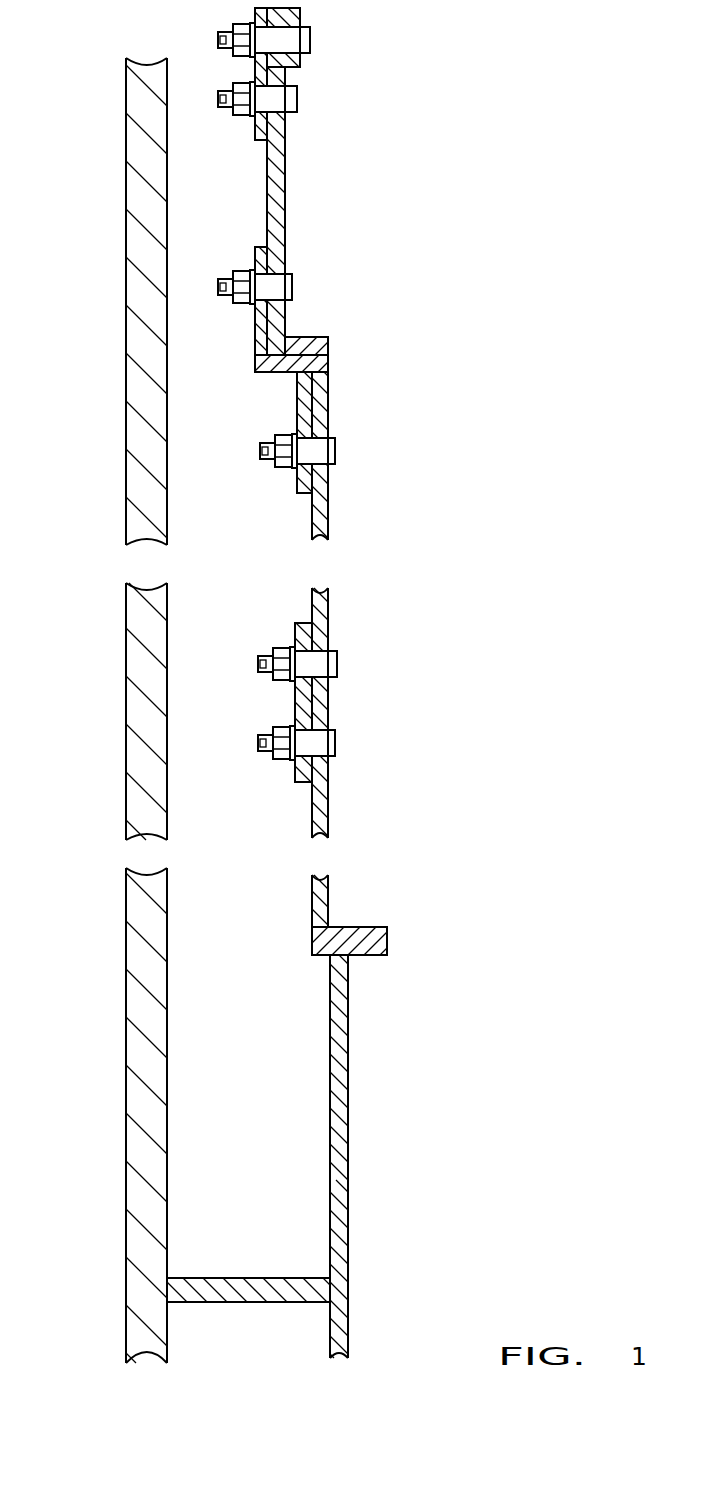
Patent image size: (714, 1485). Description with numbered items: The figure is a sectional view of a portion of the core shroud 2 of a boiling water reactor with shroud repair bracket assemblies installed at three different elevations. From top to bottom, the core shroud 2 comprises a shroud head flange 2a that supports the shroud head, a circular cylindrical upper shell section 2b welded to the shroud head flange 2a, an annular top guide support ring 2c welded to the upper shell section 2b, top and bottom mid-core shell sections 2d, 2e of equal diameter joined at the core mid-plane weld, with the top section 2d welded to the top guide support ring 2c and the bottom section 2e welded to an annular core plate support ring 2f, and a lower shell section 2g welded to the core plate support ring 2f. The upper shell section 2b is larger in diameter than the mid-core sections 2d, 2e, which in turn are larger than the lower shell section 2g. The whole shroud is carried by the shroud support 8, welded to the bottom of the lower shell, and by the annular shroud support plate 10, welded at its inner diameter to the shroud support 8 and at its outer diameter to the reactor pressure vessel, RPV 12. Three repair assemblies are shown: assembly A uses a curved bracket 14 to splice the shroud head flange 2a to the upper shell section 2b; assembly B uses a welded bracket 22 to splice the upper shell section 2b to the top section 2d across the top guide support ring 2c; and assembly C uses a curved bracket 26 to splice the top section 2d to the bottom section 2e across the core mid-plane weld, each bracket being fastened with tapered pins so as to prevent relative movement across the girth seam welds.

The core shroud 2 is at (356, 683).
The shroud head flange 2a is at (302, 12).
The upper shell section 2b is at (280, 192).
The top guide support ring 2c is at (313, 337).
The top mid-core shell section 2d is at (320, 510).
The bottom mid-core shell section 2e is at (322, 805).
The core plate support ring 2f is at (363, 927).
The lower shell section 2g is at (342, 1010).
The shroud support 8 is at (337, 1238).
The shroud support plate 10 is at (210, 1290).
The RPV 12 is at (139, 1012).
The bracket 14 is at (254, 68).
The bracket 22 is at (236, 349).
The bracket 26 is at (297, 707).
The bracket assembly A is at (181, 24).
The bracket assembly B is at (229, 424).
The bracket assembly C is at (195, 725).